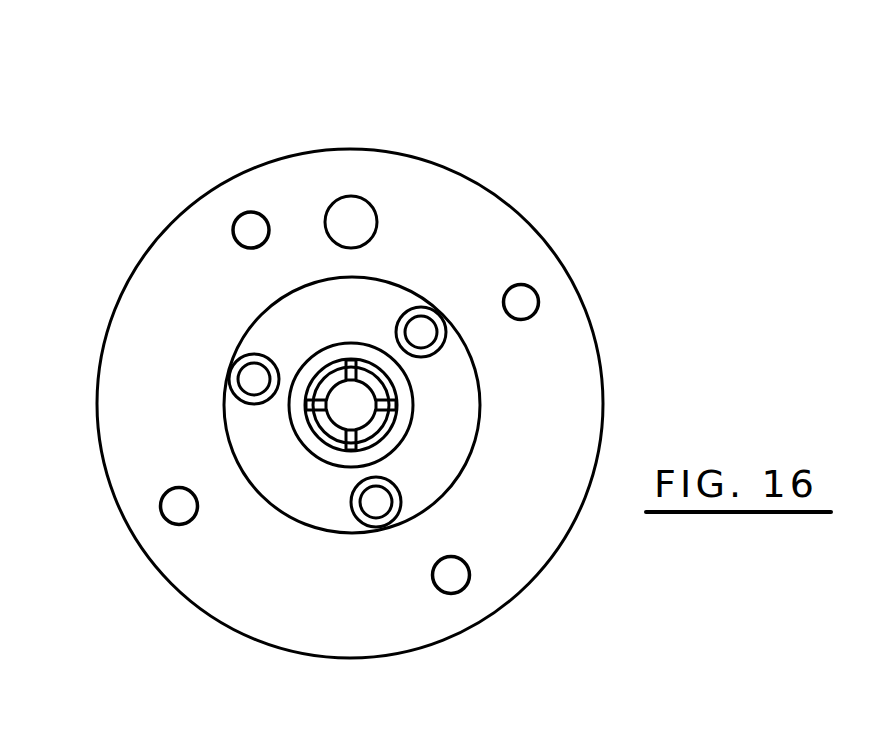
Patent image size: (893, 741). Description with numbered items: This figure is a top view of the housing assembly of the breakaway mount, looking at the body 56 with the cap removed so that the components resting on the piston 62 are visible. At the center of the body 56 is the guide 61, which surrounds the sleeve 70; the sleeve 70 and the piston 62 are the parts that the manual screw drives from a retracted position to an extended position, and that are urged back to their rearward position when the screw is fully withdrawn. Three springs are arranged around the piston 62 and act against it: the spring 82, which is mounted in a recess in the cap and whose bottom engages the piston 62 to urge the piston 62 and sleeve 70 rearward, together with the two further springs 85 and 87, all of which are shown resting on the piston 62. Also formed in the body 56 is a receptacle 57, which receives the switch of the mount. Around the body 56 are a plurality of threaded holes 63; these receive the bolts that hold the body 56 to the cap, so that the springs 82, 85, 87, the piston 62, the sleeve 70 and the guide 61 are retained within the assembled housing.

The body 56 is at (200, 293).
The receptacle 57 is at (350, 196).
The guide 61 is at (358, 353).
The piston 62 is at (448, 412).
The threaded holes 63 is at (250, 226).
The sleeve 70 is at (338, 426).
The spring 82 is at (253, 396).
The spring 85 is at (393, 502).
The spring 87 is at (425, 312).